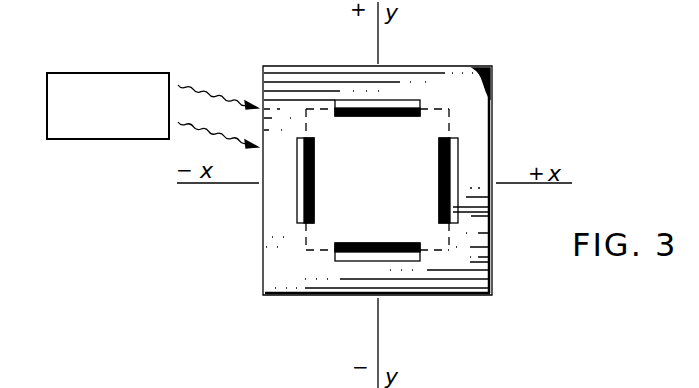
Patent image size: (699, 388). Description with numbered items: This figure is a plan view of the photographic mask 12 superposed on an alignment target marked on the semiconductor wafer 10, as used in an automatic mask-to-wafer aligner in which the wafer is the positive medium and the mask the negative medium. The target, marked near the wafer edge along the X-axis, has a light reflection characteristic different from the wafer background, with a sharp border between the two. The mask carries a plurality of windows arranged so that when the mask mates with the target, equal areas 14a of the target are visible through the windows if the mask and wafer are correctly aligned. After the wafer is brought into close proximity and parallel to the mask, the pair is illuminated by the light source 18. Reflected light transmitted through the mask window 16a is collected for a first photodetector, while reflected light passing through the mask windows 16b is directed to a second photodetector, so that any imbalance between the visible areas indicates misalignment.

The semiconductor wafer 10 is at (490, 73).
The photographic mask 12 is at (444, 75).
The equal areas of the target 14a is at (315, 192).
The mask window 16a is at (458, 211).
The mask windows 16b is at (300, 222).
The light source 18 is at (71, 139).